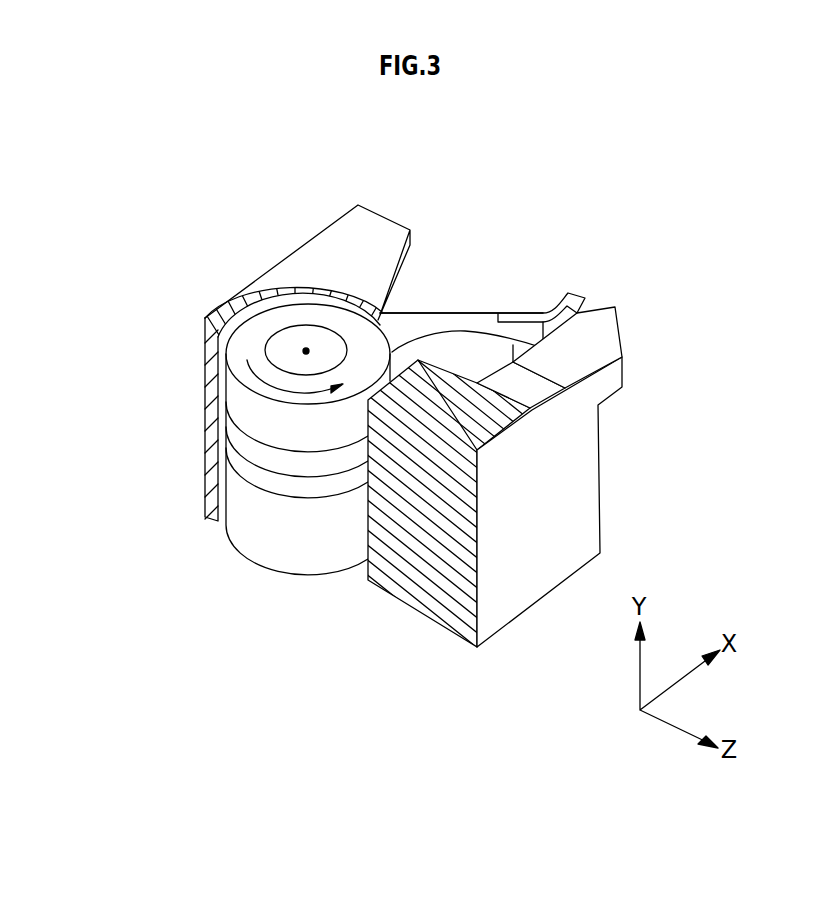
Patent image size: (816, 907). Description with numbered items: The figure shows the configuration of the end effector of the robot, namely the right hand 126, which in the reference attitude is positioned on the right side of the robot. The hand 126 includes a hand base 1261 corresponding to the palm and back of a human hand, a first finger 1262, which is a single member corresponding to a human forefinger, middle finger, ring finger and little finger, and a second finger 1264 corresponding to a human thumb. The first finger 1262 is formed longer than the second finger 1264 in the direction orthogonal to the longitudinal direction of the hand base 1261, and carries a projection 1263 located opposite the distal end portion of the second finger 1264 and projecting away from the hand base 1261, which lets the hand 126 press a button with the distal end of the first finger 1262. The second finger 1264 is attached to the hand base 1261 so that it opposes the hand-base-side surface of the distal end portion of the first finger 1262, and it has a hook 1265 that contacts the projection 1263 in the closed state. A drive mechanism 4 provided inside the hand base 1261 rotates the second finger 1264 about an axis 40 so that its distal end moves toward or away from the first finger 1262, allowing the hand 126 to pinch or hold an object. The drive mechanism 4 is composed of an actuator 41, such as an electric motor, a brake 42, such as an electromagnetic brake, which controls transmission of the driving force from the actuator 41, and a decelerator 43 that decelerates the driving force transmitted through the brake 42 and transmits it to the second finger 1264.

The drive mechanism 4 is at (118, 598).
The axis 40 is at (305, 350).
The actuator 41 is at (258, 530).
The brake 42 is at (241, 465).
The decelerator 43 is at (236, 437).
The right hand 126 is at (223, 215).
The hand base 1261 is at (396, 586).
The first finger 1262 is at (547, 390).
The projection 1263 is at (597, 340).
The second finger 1264 is at (464, 312).
The hook 1265 is at (546, 310).